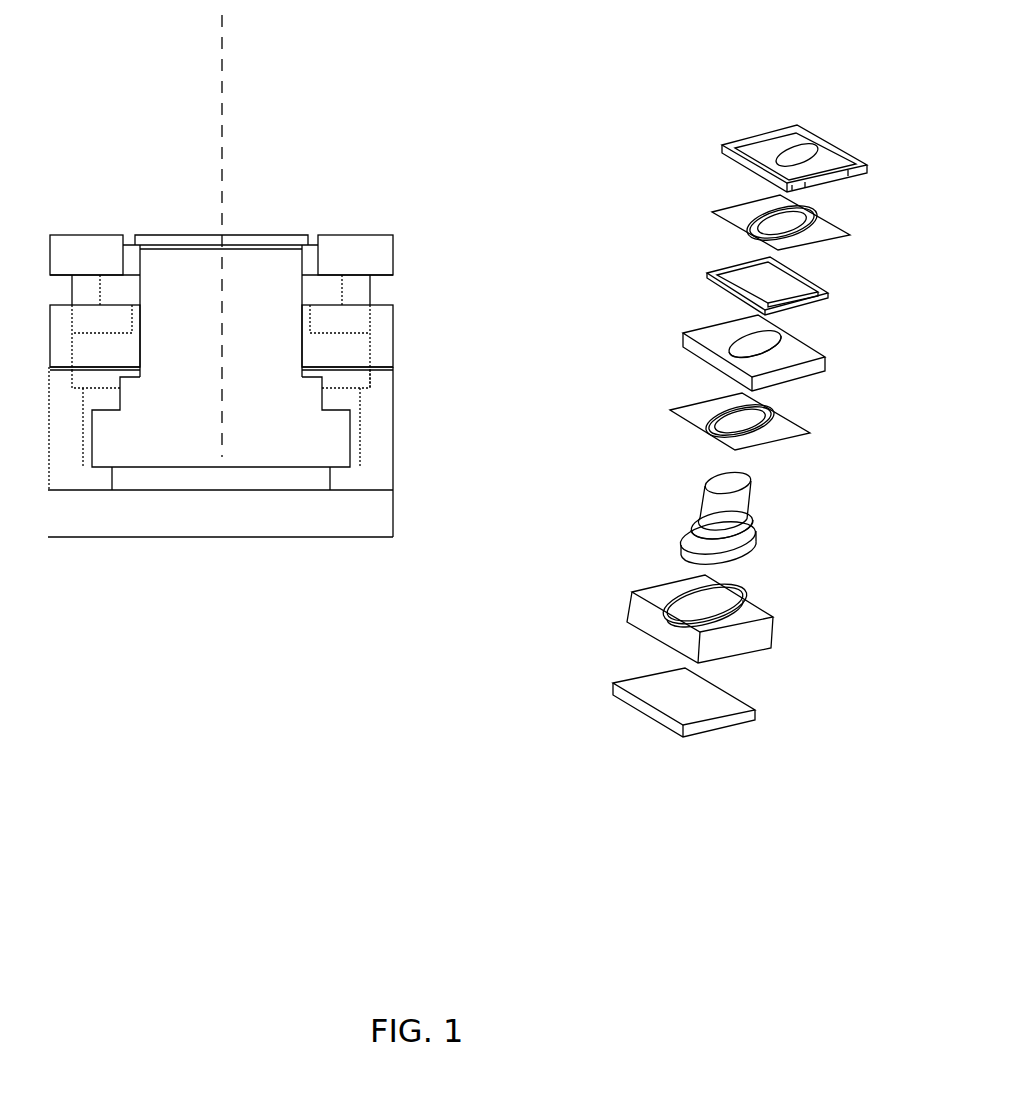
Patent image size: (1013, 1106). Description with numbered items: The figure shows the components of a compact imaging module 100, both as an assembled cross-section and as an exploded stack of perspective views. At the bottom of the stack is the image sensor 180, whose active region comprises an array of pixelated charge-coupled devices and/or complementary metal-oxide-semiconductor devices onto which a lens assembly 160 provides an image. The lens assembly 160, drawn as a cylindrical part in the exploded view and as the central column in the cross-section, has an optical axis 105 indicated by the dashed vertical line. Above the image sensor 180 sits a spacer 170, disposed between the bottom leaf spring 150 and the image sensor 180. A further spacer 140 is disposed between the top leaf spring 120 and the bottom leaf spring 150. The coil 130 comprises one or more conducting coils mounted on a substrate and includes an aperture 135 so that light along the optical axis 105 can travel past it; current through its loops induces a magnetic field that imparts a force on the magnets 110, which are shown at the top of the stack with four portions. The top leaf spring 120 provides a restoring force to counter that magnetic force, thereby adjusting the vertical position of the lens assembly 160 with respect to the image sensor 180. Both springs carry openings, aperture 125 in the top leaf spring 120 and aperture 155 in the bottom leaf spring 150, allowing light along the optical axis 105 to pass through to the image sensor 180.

The compact imaging module 100 is at (520, 37).
The optical axis 105 is at (222, 93).
The magnets 110 is at (395, 233).
The top leaf spring 120 is at (393, 275).
The aperture 125 is at (760, 222).
The coil 130 is at (368, 293).
The aperture 135 is at (757, 283).
The spacer 140 is at (393, 338).
The bottom leaf spring 150 is at (393, 370).
The aperture 155 is at (727, 422).
The lens assembly 160 is at (278, 447).
The spacer 170 is at (393, 483).
The image sensor 180 is at (357, 537).